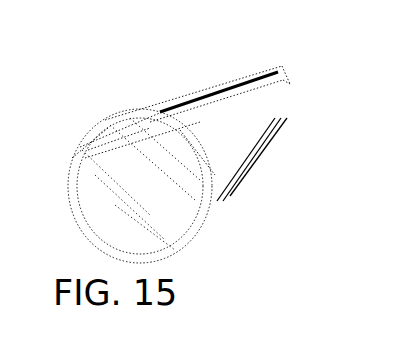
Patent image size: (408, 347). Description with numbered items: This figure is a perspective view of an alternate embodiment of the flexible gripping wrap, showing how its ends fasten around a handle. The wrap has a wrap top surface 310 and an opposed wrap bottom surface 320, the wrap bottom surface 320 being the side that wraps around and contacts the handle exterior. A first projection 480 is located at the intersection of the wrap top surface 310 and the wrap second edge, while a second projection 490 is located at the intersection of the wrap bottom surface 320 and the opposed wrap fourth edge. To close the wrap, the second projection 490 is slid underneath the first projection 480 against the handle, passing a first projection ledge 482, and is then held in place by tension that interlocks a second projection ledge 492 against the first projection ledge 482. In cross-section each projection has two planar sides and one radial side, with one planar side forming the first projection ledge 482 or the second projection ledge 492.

The wrap top surface 310 is at (221, 137).
The wrap bottom surface 320 is at (105, 193).
The first projection 480 is at (153, 122).
The first projection ledge 482 is at (175, 130).
The second projection 490 is at (102, 128).
The second projection ledge 492 is at (95, 140).